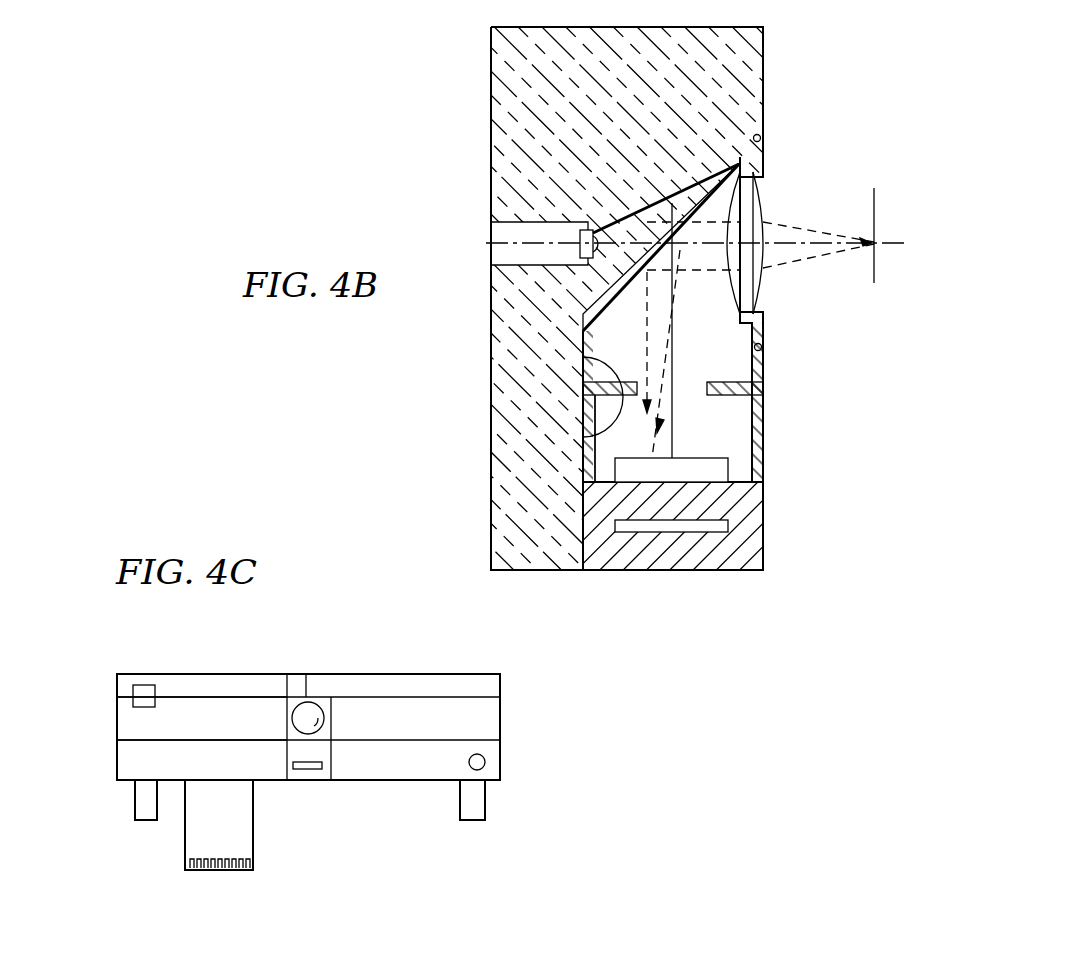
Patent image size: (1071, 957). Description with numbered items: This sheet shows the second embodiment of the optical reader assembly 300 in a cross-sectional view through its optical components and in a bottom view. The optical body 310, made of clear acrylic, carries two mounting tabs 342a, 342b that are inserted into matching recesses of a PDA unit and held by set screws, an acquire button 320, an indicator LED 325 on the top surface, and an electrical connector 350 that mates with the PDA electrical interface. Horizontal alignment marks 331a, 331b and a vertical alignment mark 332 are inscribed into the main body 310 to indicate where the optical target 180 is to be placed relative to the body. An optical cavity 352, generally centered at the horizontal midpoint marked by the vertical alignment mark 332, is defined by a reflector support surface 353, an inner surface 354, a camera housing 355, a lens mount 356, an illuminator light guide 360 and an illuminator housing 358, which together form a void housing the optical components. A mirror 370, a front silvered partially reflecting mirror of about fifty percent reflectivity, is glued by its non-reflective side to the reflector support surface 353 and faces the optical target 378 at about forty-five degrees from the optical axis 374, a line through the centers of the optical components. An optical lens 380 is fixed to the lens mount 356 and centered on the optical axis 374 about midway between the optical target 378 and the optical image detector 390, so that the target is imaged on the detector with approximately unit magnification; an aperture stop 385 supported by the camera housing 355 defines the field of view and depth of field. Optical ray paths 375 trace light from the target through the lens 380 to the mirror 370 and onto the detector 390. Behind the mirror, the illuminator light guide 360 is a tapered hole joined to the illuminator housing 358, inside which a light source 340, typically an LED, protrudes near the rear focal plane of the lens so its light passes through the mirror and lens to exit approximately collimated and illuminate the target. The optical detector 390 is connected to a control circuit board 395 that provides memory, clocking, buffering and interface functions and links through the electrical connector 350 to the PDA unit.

In FIG. 4B, the optical body 310 is at (491, 132).
In FIG. 4C, the optical body 310 is at (500, 722).
In FIG. 4B, the horizontal alignment mark 331a is at (761, 137).
In FIG. 4C, the horizontal alignment mark 331a is at (194, 693).
In FIG. 4B, the horizontal alignment mark 331b is at (762, 348).
In FIG. 4C, the horizontal alignment mark 331b is at (168, 740).
In FIG. 4B, the illuminator light guide 360 is at (643, 229).
In FIG. 4B, the mirror 370 is at (735, 212).
In FIG. 4C, the mirror 370 is at (334, 728).
In FIG. 4B, the optical lens 380 is at (762, 296).
In FIG. 4C, the optical lens 380 is at (285, 708).
In FIG. 4B, the illuminator housing 358 is at (490, 236).
In FIG. 4B, the light source 340 is at (580, 246).
In FIG. 4B, the optical ray paths 375 is at (826, 233).
In FIG. 4B, the optical target 180 is at (876, 208).
In FIG. 4B, the optical target 378 is at (868, 245).
In FIG. 4B, the optical axis 374 is at (896, 246).
In FIG. 4B, the reflector support surface 353 is at (583, 296).
In FIG. 4B, the aperture stop 385 is at (722, 382).
In FIG. 4B, the lens mount 356 is at (765, 332).
In FIG. 4B, the optical image detector 390 is at (690, 458).
In FIG. 4C, the optical image detector 390 is at (308, 770).
In FIG. 4B, the inner surface 354 is at (583, 433).
In FIG. 4B, the optical cavity 352 is at (742, 437).
In FIG. 4B, the control circuit board 395 is at (728, 526).
In FIG. 4B, the camera housing 355 is at (735, 569).
In FIG. 4C, the acquire button 320 is at (145, 685).
In FIG. 4C, the vertical alignment mark 332 is at (306, 688).
In FIG. 4C, the optical reader assembly 300 is at (387, 674).
In FIG. 4C, the indicator LED 325 is at (486, 762).
In FIG. 4C, the mounting tab 342a is at (472, 820).
In FIG. 4C, the mounting tab 342b is at (147, 820).
In FIG. 4C, the electrical connector 350 is at (218, 870).